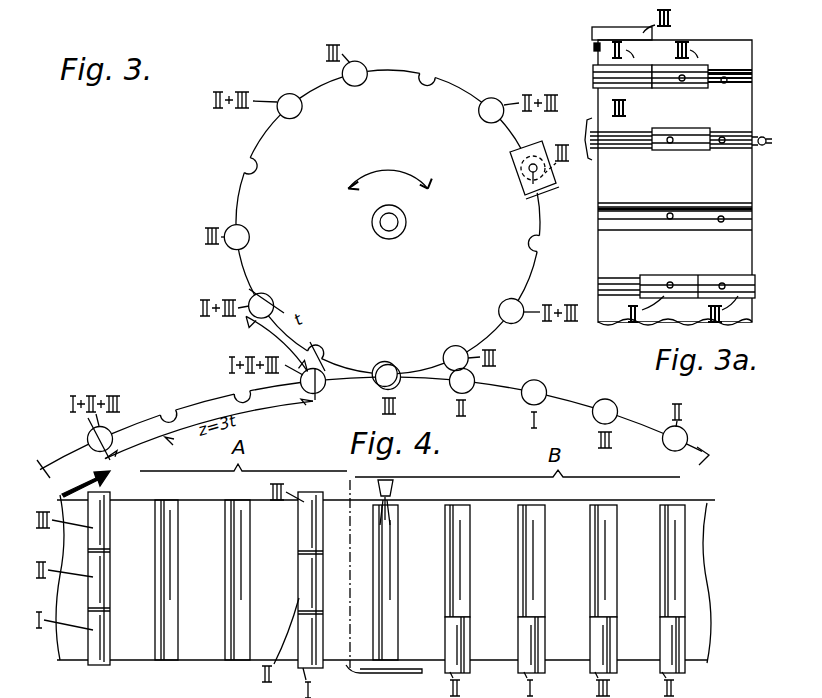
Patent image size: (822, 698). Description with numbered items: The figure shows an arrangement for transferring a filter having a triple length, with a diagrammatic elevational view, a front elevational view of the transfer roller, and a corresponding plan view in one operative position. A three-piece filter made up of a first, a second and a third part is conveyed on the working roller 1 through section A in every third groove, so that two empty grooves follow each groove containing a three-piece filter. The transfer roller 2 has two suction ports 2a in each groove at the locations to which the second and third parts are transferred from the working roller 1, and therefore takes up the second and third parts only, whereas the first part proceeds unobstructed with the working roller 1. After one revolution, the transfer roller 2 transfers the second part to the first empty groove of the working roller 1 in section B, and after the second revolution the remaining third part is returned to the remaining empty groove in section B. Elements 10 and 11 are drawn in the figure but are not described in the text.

In FIG. 3, the working roller 1 is at (704, 438).
In FIG. 4, the working roller 1 is at (705, 518).
In FIG. 3, the transfer roller 2 is at (537, 213).
In FIG. 3A, the transfer roller 2 is at (732, 187).
In FIG. 3A, the suction ports 2a is at (686, 81).
In FIG. 3, the transfer device 10 is at (512, 168).
In FIG. 3A, the transfer device 10 is at (765, 137).
In FIG. 4, the transfer device 10 is at (396, 484).
In FIG. 3, the guide plate 11 is at (524, 190).
In FIG. 3A, the guide plate 11 is at (588, 119).
In FIG. 4, the guide plate 11 is at (392, 677).